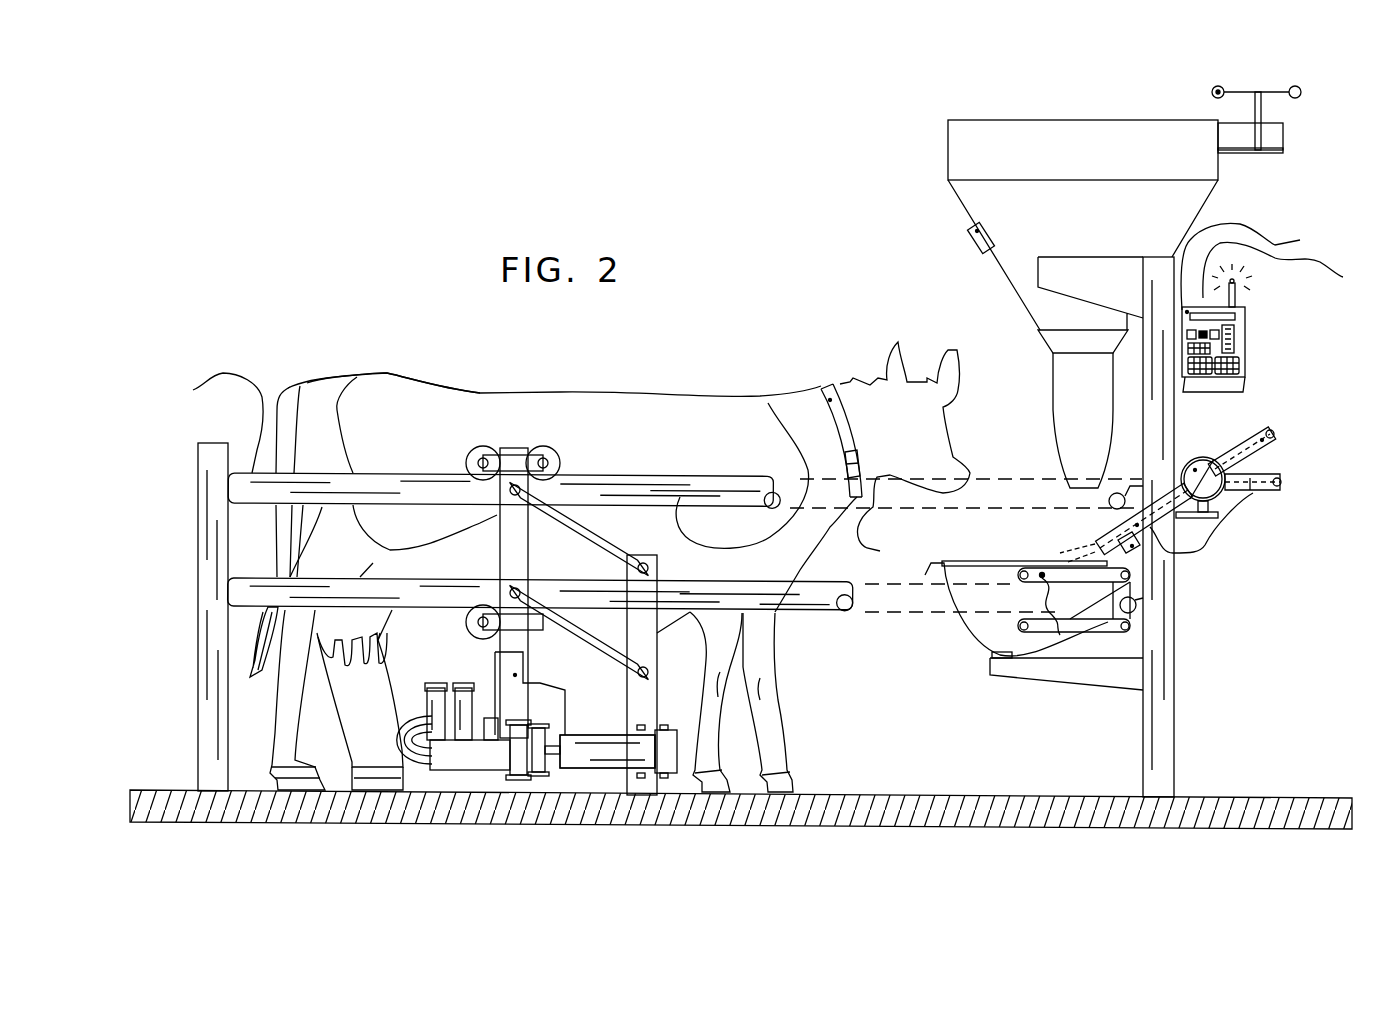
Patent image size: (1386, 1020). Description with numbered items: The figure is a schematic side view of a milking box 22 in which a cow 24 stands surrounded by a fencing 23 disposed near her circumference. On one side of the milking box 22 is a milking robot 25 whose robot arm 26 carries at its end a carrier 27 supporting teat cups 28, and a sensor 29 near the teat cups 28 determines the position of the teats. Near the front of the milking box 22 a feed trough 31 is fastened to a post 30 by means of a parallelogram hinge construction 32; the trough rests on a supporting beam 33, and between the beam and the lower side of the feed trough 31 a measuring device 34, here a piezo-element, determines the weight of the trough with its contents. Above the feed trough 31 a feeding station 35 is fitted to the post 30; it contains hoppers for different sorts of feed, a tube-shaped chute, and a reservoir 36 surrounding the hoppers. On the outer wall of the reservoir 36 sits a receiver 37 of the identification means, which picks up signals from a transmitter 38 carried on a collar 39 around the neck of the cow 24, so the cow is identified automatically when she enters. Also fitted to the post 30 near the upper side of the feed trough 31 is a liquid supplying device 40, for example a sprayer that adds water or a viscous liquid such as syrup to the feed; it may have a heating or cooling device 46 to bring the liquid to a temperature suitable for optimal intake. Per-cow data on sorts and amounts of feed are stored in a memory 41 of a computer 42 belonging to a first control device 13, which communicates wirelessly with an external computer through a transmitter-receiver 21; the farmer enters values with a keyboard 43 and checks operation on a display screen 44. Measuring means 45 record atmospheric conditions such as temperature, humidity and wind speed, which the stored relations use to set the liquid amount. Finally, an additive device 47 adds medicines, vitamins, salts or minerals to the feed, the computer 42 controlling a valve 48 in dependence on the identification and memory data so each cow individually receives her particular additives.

The first control device 13 is at (1385, 277).
The transmitter-receiver 21 is at (1236, 296).
The milking box 22 is at (880, 762).
The fencing 23 is at (193, 390).
The cow 24 is at (395, 427).
The milking robot 25 is at (565, 783).
The robot arm 26 is at (632, 792).
The carrier 27 is at (447, 776).
The teat cups 28 is at (428, 690).
The sensor 29 is at (585, 681).
The post 30 is at (212, 756).
The feed trough 31 is at (1003, 573).
The parallelogram hinge construction 32 is at (1100, 662).
The supporting beam 33 is at (1028, 666).
The measuring device 34 is at (985, 656).
The feeding station 35 is at (940, 165).
The reservoir 36 is at (1196, 196).
The receiver 37 is at (974, 232).
The transmitter 38 is at (860, 502).
The collar 39 is at (822, 388).
The liquid supplying device 40 is at (1260, 568).
The memory 41 is at (1236, 345).
The computer 42 is at (1348, 240).
The keyboard 43 is at (1246, 372).
The display screen 44 is at (1242, 318).
The measuring means 45 is at (1290, 125).
The heating or cooling device 46 is at (1138, 535).
The additive device 47 is at (1262, 440).
The valve 48 is at (1240, 442).